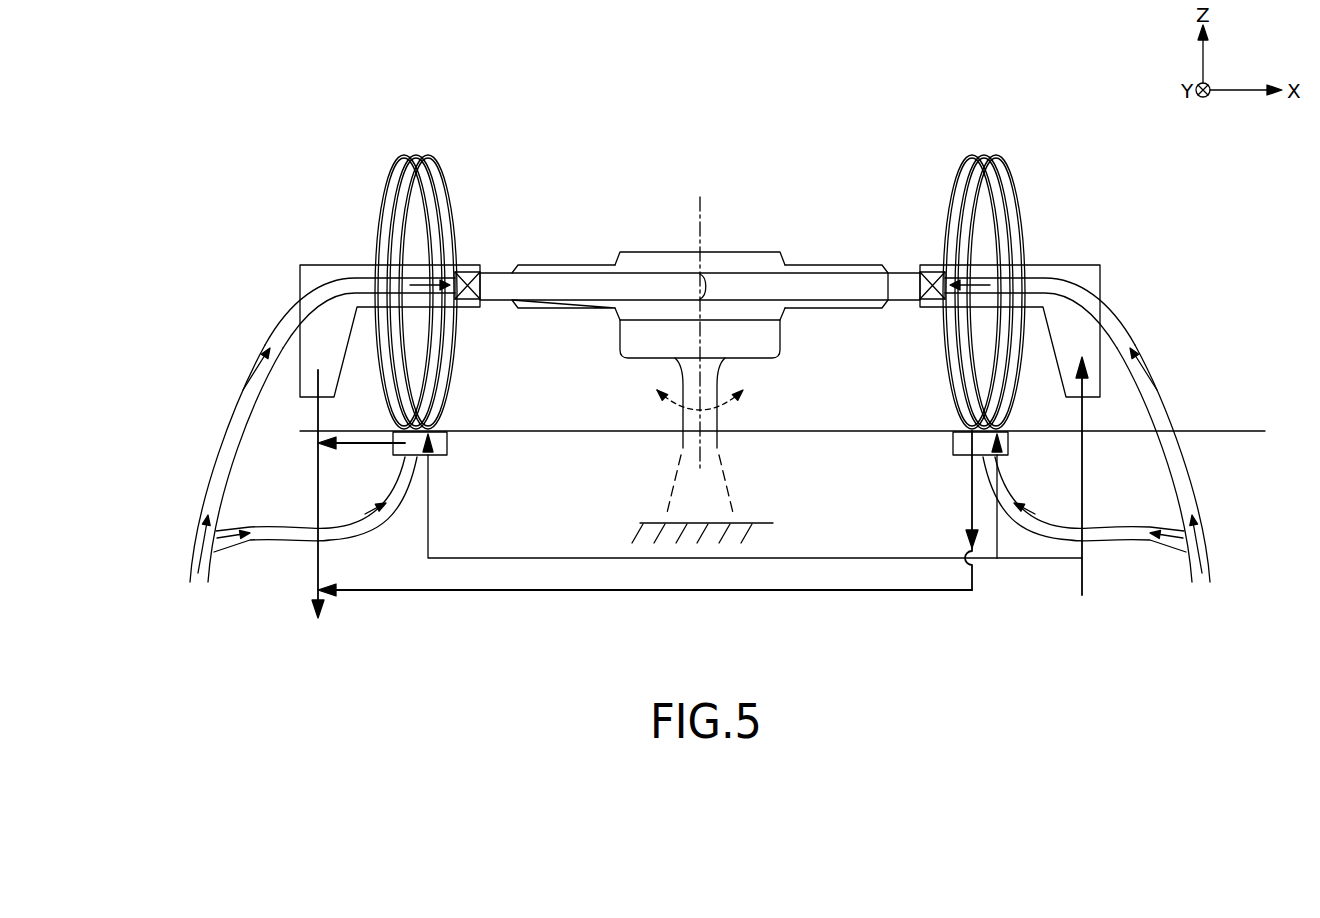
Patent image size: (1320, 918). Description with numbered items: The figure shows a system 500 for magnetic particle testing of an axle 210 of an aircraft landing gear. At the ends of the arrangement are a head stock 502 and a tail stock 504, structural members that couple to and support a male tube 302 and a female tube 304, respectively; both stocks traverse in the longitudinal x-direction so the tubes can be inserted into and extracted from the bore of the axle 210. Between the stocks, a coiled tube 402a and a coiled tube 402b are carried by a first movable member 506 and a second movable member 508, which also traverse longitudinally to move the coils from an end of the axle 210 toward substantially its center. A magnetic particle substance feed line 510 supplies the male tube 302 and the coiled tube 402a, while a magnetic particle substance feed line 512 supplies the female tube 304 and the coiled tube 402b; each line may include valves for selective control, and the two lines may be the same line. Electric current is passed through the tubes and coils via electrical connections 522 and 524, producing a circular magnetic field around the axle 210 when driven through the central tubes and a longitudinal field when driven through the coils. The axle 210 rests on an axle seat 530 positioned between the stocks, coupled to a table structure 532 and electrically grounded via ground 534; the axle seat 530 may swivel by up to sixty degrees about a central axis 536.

The system 500 is at (347, 91).
The tail stock 504 is at (315, 265).
The coiled tube 402b is at (457, 230).
The female tube 304 is at (585, 273).
The male tube 302 is at (848, 273).
The axle 210 is at (768, 252).
The central axis 536 is at (700, 197).
The axle seat 530 is at (763, 360).
The table structure 532 is at (630, 433).
The ground 534 is at (773, 525).
The head stock 502 is at (1100, 265).
The coiled tube 402a is at (1025, 218).
The magnetic particle substance feed line 510 is at (1195, 485).
The magnetic particle substance feed line 512 is at (197, 527).
The electrical connection 522 is at (1083, 472).
The electrical connection 524 is at (316, 455).
The first movable member 506 is at (963, 458).
The second movable member 508 is at (442, 457).